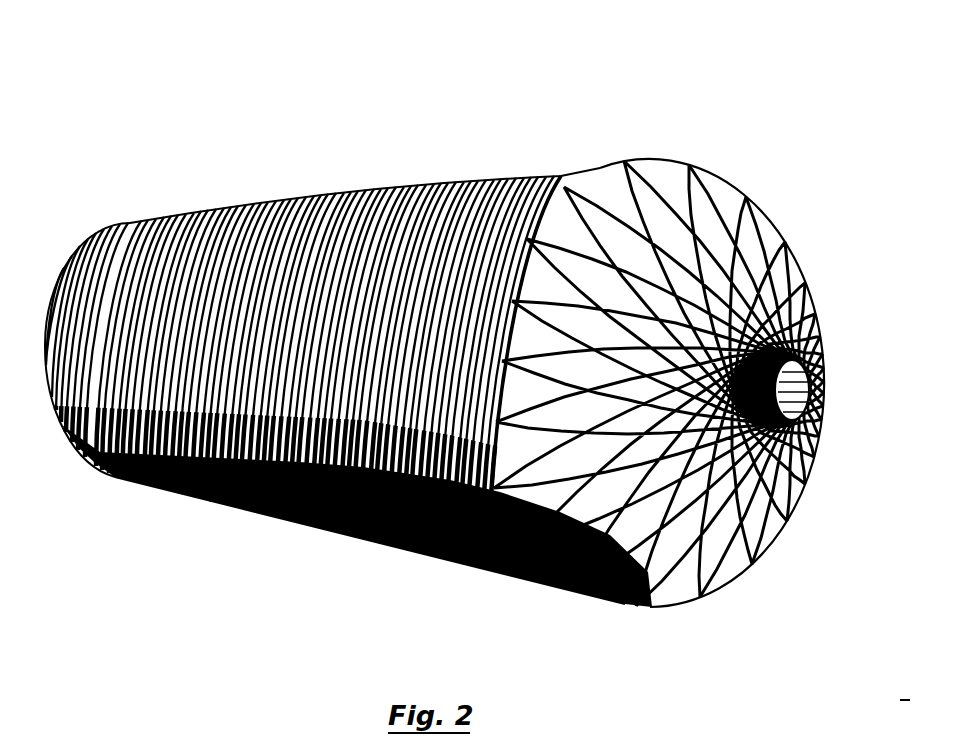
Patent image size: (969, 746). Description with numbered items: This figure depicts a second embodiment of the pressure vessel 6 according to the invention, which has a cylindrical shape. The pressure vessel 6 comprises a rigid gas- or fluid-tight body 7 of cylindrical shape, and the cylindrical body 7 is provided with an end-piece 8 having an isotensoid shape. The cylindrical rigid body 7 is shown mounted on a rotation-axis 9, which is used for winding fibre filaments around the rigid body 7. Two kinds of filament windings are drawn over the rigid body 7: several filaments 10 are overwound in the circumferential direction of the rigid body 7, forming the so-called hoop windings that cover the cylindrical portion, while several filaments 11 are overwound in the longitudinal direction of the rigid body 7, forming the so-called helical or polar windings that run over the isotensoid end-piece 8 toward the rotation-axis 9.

The pressure vessel 6 is at (453, 335).
The rigid gas- or fluid-tight body 7 is at (514, 456).
The end-piece 8 is at (702, 134).
The rotation-axis 9 is at (790, 336).
The filaments 10 is at (563, 177).
The filaments 11 is at (642, 177).